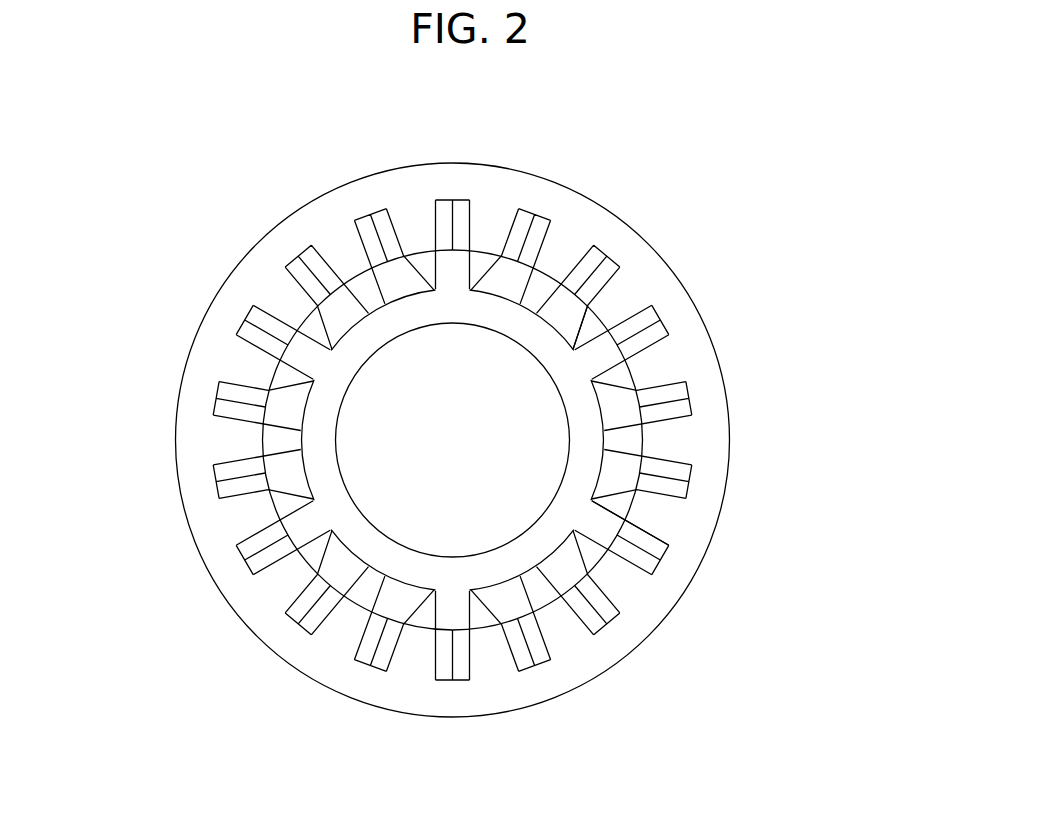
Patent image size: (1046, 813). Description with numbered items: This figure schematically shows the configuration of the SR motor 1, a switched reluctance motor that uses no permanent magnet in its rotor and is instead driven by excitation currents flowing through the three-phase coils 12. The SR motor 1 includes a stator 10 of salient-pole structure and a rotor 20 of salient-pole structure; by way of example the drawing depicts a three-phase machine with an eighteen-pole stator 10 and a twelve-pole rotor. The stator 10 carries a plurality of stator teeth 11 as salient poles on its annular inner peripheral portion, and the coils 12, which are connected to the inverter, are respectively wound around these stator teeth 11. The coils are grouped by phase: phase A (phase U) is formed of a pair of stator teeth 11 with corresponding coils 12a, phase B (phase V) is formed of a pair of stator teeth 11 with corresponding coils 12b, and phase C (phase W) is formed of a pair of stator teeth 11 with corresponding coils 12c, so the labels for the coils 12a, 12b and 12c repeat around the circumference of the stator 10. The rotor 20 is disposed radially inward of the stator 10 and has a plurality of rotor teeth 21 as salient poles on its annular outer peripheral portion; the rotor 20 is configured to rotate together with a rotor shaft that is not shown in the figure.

The SR motor 1 is at (688, 110).
The stator 10 is at (393, 165).
The stator teeth 11 is at (617, 588).
The coils 12 is at (455, 438).
The coils of phase A 12a is at (373, 222).
The coils of phase B 12b is at (303, 262).
The coils of phase C 12c is at (452, 208).
The rotor 20 is at (566, 334).
The rotor teeth 21 is at (605, 513).